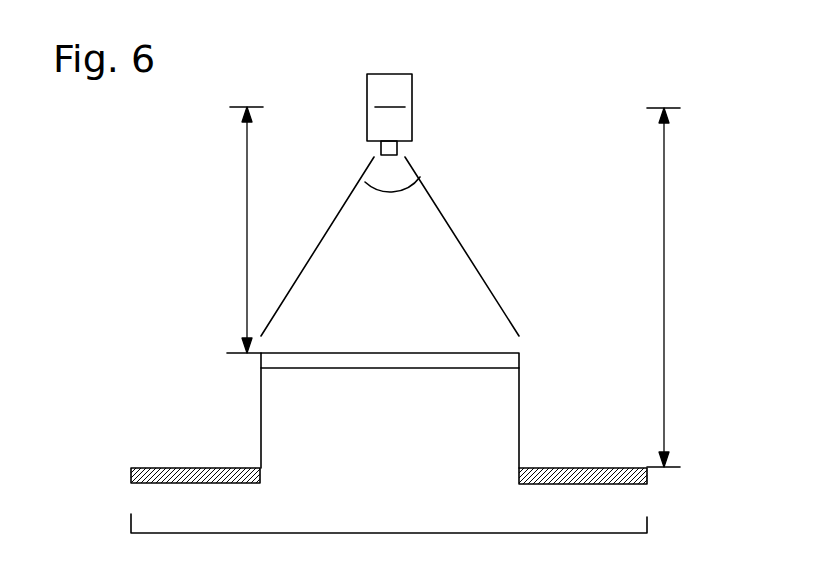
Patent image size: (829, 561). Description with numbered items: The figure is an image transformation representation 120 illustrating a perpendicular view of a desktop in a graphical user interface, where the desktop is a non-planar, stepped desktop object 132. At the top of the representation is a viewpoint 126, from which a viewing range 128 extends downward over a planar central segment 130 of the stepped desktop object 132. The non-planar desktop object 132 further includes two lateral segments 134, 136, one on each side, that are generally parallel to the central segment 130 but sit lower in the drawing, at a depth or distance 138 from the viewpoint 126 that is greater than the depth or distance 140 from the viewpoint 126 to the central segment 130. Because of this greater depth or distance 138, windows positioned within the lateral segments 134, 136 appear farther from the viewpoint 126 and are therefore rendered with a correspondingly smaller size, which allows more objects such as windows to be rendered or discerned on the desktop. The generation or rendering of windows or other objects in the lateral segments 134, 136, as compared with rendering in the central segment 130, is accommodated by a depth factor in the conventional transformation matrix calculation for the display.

The image transformation representation 120 is at (577, 128).
The viewpoint 126 is at (403, 129).
The viewing range 128 is at (403, 193).
The planar central segment 130 is at (350, 353).
The non-planar, stepped desktop object 132 is at (647, 519).
The lateral segment 134 is at (157, 467).
The lateral segment 136 is at (608, 467).
The depth or distance 138 is at (664, 239).
The depth or distance 140 is at (245, 238).